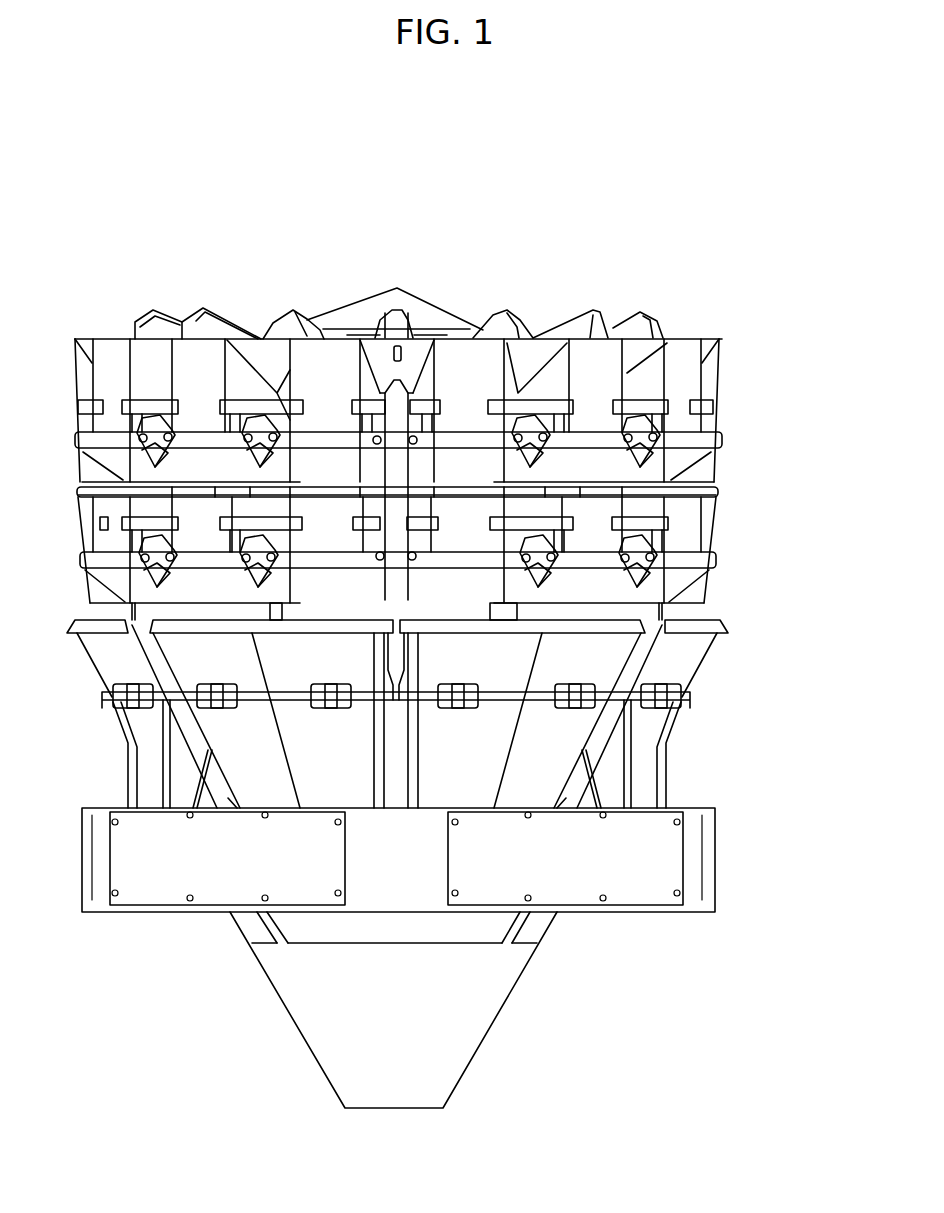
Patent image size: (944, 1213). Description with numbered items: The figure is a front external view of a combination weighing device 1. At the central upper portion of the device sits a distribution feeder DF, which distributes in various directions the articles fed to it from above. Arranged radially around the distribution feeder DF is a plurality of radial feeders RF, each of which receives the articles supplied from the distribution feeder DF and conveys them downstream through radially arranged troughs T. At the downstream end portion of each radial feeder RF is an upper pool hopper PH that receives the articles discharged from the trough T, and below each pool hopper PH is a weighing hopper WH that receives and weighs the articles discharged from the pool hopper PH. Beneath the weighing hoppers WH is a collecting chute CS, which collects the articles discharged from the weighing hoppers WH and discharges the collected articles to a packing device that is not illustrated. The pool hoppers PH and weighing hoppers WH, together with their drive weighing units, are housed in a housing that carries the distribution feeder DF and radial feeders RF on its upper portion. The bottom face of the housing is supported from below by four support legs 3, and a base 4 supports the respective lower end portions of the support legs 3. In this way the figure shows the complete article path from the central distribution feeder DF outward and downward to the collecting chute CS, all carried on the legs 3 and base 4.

The combination weighing device 1 is at (793, 297).
The radial feeder RF is at (157, 303).
The trough T is at (223, 318).
The distribution feeder DF is at (422, 300).
The pool hopper PH is at (685, 381).
The weighing hopper WH is at (702, 521).
The collecting chute CS is at (680, 668).
The support leg 3 is at (520, 613).
The base 4 is at (692, 855).